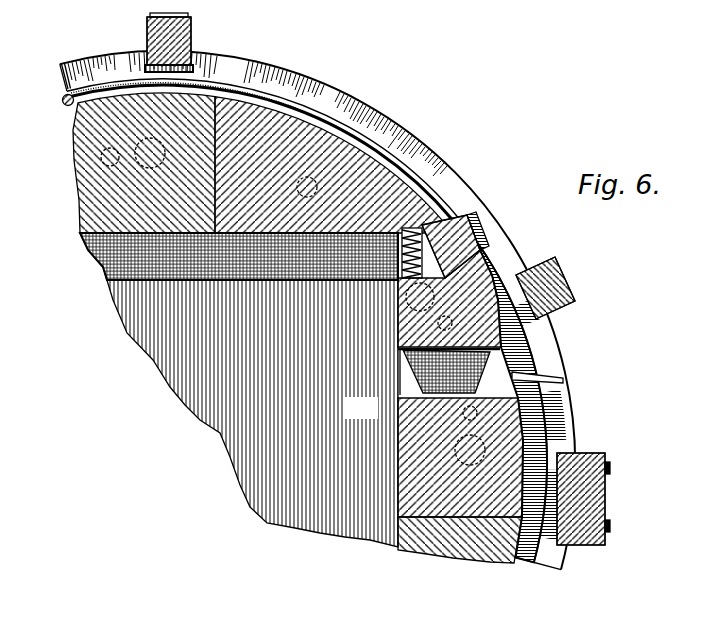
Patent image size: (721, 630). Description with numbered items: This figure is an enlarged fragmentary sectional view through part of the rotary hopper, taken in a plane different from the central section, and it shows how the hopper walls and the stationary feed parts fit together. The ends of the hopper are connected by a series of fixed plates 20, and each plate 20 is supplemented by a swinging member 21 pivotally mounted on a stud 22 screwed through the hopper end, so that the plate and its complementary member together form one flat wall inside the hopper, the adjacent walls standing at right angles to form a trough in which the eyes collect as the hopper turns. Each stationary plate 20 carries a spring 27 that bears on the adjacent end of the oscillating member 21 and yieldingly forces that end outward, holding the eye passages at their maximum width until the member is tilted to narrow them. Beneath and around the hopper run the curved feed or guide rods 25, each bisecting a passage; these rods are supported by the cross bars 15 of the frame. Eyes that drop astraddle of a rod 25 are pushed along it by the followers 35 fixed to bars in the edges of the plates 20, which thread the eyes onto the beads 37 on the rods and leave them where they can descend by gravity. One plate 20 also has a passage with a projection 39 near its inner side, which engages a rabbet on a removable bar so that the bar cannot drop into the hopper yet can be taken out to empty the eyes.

The cross bars 15 is at (192, 37).
The plates 20 is at (83, 189).
The swinging members 21 is at (418, 188).
The studs 22 is at (308, 183).
The feed or guide rods 25 is at (276, 66).
The spring 27 is at (427, 226).
The followers 35 is at (495, 239).
The beads 37 is at (66, 104).
The projection 39 is at (402, 396).